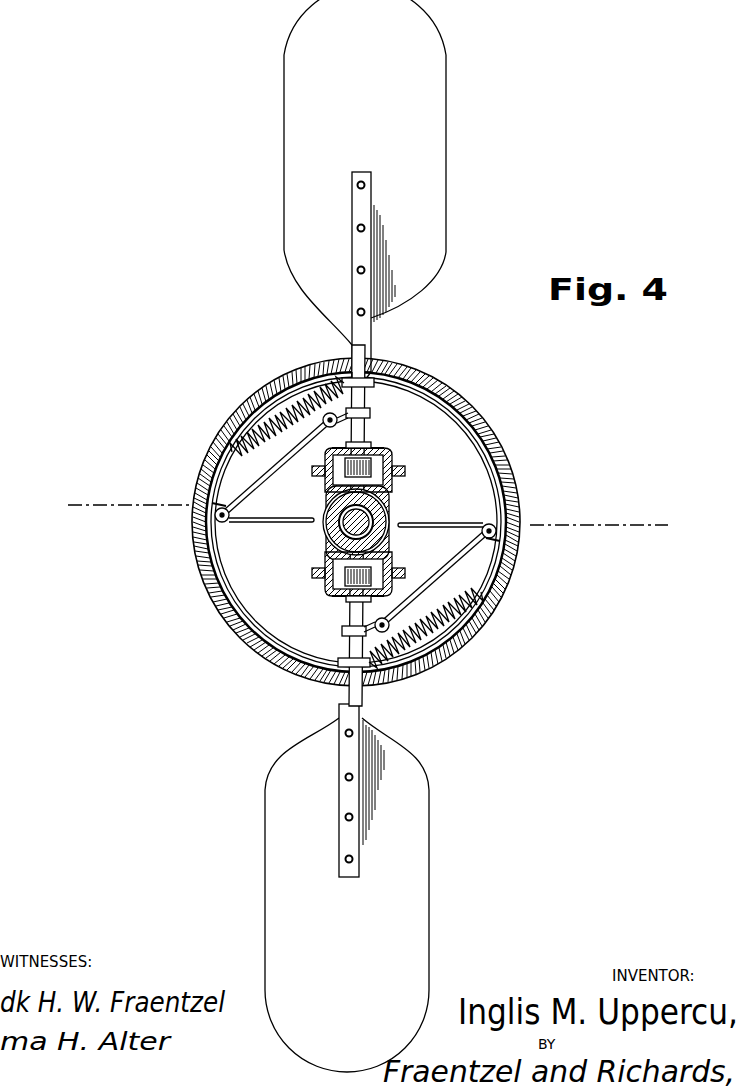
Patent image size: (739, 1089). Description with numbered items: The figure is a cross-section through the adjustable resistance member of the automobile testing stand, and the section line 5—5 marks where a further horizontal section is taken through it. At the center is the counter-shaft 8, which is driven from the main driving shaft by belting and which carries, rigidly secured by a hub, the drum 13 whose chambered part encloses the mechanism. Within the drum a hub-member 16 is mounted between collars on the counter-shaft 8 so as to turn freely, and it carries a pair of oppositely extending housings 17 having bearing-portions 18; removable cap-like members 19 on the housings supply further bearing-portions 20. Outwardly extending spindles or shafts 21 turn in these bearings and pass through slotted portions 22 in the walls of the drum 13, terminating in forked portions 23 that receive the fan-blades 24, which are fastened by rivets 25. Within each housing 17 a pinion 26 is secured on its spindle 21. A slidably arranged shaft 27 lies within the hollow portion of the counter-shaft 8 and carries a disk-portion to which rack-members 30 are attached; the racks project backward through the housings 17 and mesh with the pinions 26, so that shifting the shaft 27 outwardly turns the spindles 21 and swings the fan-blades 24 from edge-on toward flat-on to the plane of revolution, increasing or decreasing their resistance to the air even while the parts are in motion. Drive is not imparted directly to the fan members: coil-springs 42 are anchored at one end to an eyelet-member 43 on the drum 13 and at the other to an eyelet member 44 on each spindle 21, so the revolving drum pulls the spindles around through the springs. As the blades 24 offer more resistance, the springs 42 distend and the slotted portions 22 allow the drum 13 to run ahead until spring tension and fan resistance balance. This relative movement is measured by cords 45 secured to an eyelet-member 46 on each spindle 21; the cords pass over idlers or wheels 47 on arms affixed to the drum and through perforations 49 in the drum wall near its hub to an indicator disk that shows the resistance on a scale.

The section line 5— 5 is at (365, 512).
The counter-shaft 8 is at (374, 512).
The drum 13 is at (245, 412).
The hub-member 16 is at (323, 533).
The housings 17 is at (326, 474).
The bearing-portions 18 is at (392, 476).
The cap-like members 19 is at (396, 466).
The bearing-portions 20 is at (362, 454).
The spindles or shafts 21 is at (368, 362).
The slotted portions 22 is at (400, 375).
The forked portions 23 is at (368, 202).
The fan-blades 24 is at (428, 110).
The rivets 25 is at (356, 187).
The pinion 26 is at (405, 468).
The slidably arranged shaft 27 is at (400, 520).
The rack-members 30 is at (312, 469).
The coil-springs 42 is at (283, 410).
The eyelet-member 43 is at (203, 465).
The eyelet member 44 is at (375, 381).
The cords 45 is at (230, 487).
The eyelet-member 46 is at (372, 412).
The idlers or wheels 47 is at (293, 383).
The perforations 49 is at (310, 523).